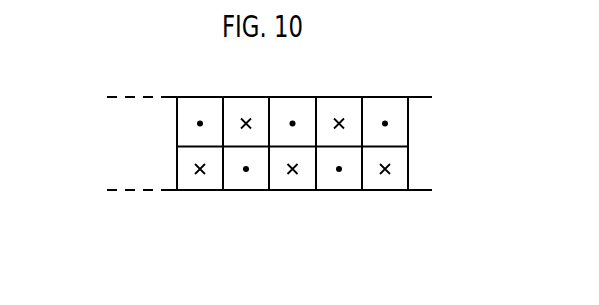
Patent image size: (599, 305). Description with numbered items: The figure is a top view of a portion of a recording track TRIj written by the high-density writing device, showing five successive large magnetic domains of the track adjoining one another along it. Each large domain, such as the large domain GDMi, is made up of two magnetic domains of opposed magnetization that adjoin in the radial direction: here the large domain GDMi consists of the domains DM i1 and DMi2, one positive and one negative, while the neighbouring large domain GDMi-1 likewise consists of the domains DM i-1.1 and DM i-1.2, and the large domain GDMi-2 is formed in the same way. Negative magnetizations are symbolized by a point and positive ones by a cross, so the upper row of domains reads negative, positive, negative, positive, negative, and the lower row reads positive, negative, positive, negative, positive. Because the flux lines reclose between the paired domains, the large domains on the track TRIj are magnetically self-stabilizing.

The recording track TRIj is at (389, 97).
The large magnetic domain GDMi is at (320, 190).
The large magnetic domain GDMi-1 is at (337, 190).
The large magnetic domain GDMi-2 is at (404, 190).
The magnetic domain DM i1 is at (291, 97).
The magnetic domain DMi2 is at (297, 172).
The magnetic domain DM i-1.1 is at (340, 97).
The magnetic domain DM i-1.2 is at (327, 172).